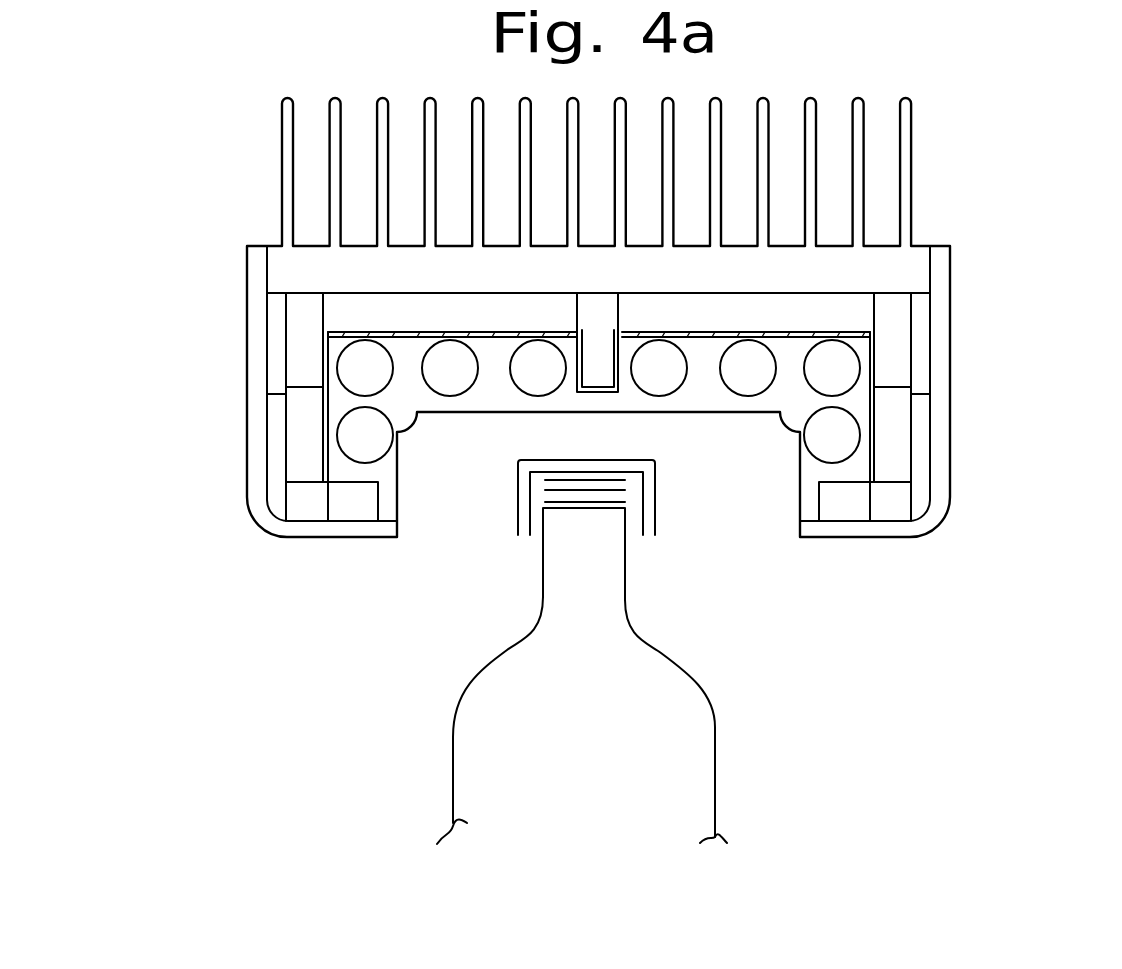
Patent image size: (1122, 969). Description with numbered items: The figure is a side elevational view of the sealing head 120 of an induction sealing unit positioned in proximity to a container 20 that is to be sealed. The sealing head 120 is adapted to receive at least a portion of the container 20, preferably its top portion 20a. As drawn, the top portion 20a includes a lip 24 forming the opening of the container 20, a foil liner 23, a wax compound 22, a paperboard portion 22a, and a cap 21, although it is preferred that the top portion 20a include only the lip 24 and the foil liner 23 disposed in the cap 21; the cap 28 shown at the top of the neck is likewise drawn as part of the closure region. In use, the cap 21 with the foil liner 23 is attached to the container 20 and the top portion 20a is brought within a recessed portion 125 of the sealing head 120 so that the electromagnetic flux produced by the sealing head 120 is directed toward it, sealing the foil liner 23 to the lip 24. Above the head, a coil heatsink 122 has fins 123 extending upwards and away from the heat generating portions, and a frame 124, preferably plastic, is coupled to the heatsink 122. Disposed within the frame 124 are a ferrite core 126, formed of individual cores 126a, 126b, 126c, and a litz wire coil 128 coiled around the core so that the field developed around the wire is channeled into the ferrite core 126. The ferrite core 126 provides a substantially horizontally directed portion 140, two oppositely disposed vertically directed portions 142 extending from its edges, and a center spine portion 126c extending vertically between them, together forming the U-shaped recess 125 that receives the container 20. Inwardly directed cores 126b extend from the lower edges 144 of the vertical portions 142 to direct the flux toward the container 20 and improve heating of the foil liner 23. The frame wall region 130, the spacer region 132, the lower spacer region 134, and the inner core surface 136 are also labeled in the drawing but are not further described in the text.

The container 20 is at (628, 632).
The top portion 20a is at (654, 523).
The cap 21 is at (526, 531).
The wax compound 22 is at (630, 478).
The paperboard portion 22a is at (633, 472).
The foil liner 23 is at (630, 502).
The lip 24 is at (628, 512).
The closure cap 28 is at (567, 460).
The sealing head 120 is at (977, 133).
The coil heatsink 122 is at (511, 148).
The fins 123 is at (331, 104).
The frame 124 is at (252, 403).
The recessed portion 125 is at (438, 556).
The ferrite core 126 is at (544, 389).
The individual core 126a is at (893, 350).
The inwardly directed cores 126b is at (362, 505).
The center spine portion 126c is at (596, 370).
The litz wire coil 128 is at (720, 354).
The side wall gap 130 is at (877, 330).
The insulating spacer 132 is at (922, 378).
The lower spacer 134 is at (872, 450).
The coil block inner surface 136 is at (777, 395).
The horizontally directed portion 140 is at (397, 331).
The vertically directed portions 142 is at (285, 463).
The lower edges 144 is at (890, 485).